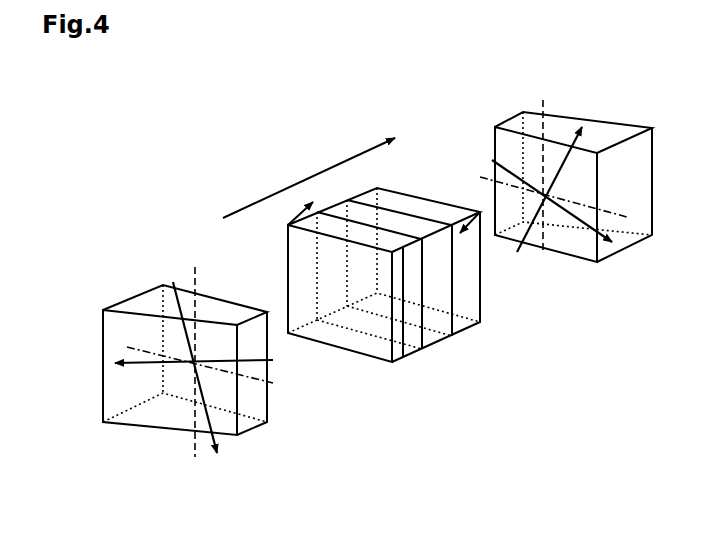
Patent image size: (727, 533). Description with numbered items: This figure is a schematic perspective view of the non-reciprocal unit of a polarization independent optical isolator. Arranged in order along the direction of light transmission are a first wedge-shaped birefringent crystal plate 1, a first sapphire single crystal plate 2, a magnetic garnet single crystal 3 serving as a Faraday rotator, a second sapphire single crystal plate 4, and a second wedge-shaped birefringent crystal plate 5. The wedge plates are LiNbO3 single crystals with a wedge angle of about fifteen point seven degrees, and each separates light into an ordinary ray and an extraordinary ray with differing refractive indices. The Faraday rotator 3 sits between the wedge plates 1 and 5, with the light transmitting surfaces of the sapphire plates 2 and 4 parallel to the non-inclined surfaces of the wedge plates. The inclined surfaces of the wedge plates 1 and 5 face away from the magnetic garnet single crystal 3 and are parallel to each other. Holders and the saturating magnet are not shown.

The first wedge-shaped birefringent crystal plate 1 is at (143, 432).
The first sapphire single crystal plate 2 is at (370, 357).
The magnetic garnet single crystal 3 is at (440, 338).
The second sapphire single crystal plate 4 is at (473, 328).
The second wedge-shaped birefringent crystal plate 5 is at (600, 123).